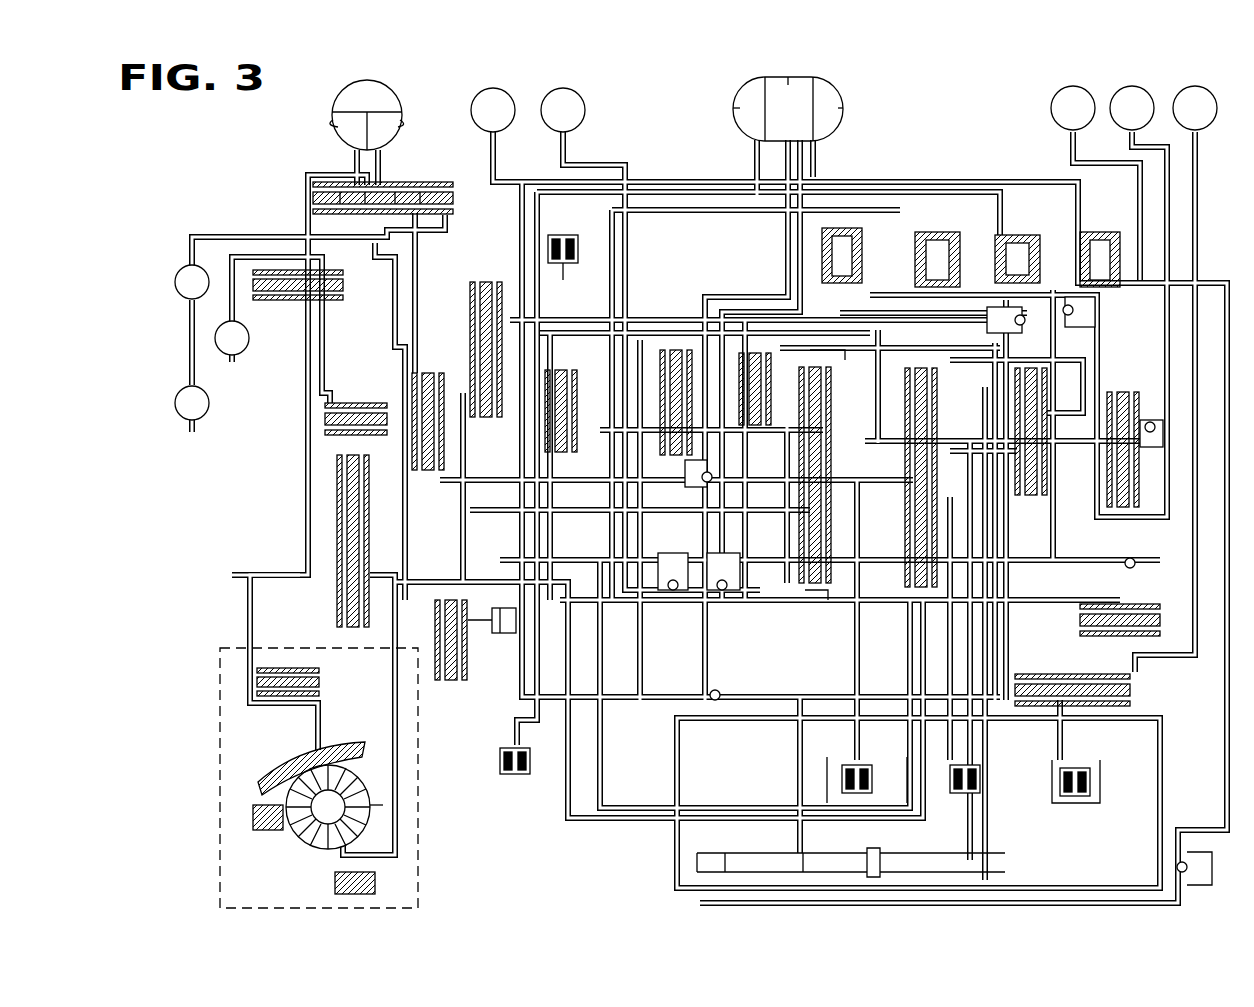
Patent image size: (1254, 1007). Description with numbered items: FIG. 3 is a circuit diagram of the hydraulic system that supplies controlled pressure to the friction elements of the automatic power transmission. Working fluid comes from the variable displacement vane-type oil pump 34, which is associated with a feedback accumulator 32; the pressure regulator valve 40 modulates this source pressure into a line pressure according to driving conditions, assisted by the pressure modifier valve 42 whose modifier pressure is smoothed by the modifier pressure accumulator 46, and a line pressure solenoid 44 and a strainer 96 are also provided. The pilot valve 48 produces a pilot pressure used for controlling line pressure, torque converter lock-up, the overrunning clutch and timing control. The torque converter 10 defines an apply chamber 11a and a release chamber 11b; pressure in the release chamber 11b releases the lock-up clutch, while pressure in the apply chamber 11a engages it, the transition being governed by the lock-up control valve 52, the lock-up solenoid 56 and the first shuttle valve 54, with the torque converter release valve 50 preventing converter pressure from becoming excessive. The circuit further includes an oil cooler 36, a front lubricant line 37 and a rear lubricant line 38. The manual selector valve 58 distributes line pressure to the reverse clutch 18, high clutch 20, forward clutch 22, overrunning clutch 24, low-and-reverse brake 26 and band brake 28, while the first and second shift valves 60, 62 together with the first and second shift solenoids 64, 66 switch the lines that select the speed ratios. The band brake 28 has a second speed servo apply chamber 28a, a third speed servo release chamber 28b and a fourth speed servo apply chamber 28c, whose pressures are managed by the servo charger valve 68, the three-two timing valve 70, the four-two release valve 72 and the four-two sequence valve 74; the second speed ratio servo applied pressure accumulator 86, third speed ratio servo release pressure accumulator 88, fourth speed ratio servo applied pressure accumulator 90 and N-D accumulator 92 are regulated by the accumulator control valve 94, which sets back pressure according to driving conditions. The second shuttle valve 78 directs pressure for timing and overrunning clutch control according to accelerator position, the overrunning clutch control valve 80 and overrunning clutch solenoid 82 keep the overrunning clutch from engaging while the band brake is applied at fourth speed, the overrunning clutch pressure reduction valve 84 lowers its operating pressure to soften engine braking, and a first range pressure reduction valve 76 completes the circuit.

The torque converter 10 is at (393, 88).
The apply chamber 11a is at (402, 124).
The release chamber 11b is at (333, 124).
The reverse clutch 18 is at (497, 88).
The high clutch 20 is at (568, 88).
The forward clutch 22 is at (1080, 87).
The overrunning clutch 24 is at (1140, 87).
The low-and-reverse brake 26 is at (1202, 87).
The band brake 28 is at (836, 80).
The second speed servo apply chamber 28a is at (734, 110).
The third speed servo release chamber 28b is at (788, 77).
The fourth speed servo apply chamber 28c is at (843, 110).
The feedback accumulator 32 is at (324, 690).
The variable displacement vane-type oil pump 34 is at (298, 843).
The oil cooler 36 is at (175, 283).
The front lubricant line 37 is at (246, 350).
The rear lubricant line 38 is at (178, 395).
The pressure regulator valve 40 is at (335, 605).
The pressure modifier valve 42 is at (430, 372).
The line pressure solenoid 44 is at (497, 775).
The modifier pressure accumulator 46 is at (352, 400).
The pilot valve 48 is at (470, 662).
The torque converter release valve 50 is at (335, 302).
The lock-up control valve 52 is at (450, 222).
The first shuttle valve 54 is at (676, 458).
The lock-up solenoid 56 is at (580, 250).
The manual selector valve 58 is at (935, 842).
The first shift valve 60 is at (920, 372).
The second shift valve 62 is at (840, 365).
The first shift solenoid 64 is at (982, 772).
The second shift solenoid 66 is at (875, 770).
The servo charger valve 68 is at (470, 318).
The 3-2 timing valve 70 is at (756, 428).
The 4-2 release valve 72 is at (826, 596).
The 4-2 sequence valve 74 is at (833, 560).
The first range pressure reduction valve 76 is at (1160, 605).
The second shuttle valve 78 is at (1060, 710).
The overrunning clutch control valve 80 is at (1048, 470).
The overrunning clutch solenoid 82 is at (1076, 798).
The overrunning clutch pressure reduction valve 84 is at (1126, 390).
The second speed ratio servo applied pressure accumulator 86 is at (950, 240).
The third speed ratio servo release pressure accumulator 88 is at (1030, 240).
The fourth speed ratio servo applied pressure accumulator 90 is at (862, 250).
The N-D accumulator 92 is at (1110, 240).
The accumulator control valve 94 is at (565, 366).
The strainer 96 is at (505, 635).